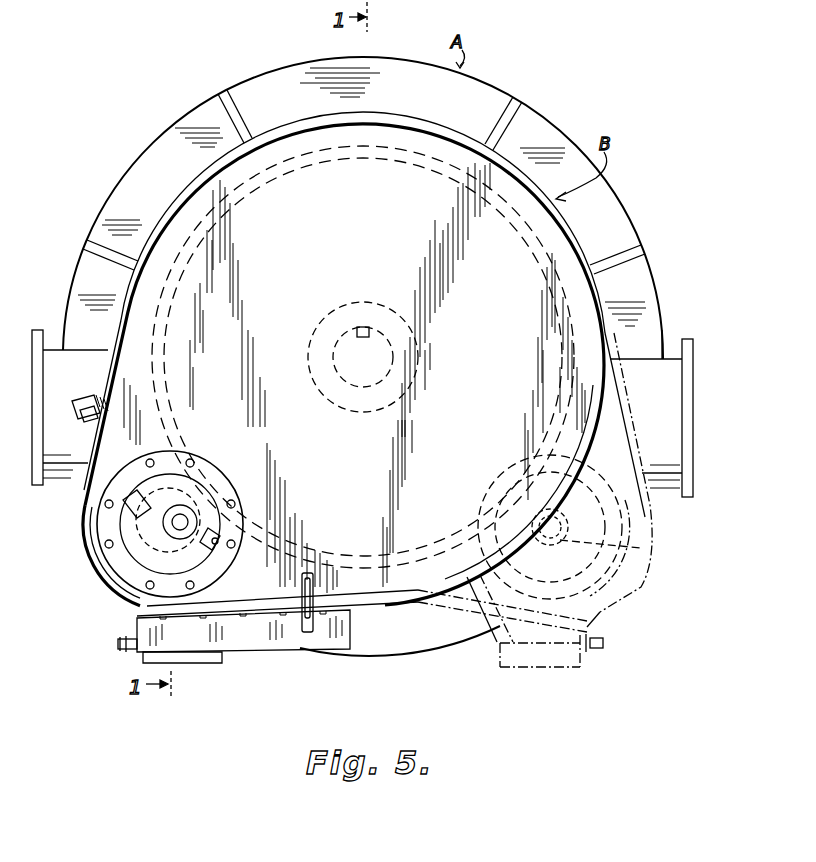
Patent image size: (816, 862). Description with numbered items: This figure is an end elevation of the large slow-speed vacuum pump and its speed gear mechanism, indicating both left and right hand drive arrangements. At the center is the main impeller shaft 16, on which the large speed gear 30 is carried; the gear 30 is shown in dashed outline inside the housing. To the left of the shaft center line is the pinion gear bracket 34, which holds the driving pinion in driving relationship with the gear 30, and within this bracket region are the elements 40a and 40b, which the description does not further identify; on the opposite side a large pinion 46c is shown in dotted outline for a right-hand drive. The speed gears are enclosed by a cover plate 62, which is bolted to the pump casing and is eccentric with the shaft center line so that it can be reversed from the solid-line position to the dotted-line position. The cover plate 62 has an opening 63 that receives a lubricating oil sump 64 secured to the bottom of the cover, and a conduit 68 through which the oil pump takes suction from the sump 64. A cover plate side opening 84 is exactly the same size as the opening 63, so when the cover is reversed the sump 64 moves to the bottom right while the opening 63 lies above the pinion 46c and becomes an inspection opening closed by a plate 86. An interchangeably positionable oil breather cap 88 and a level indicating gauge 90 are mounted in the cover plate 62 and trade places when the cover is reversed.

The main impeller shaft 16 is at (385, 355).
The speed gear 30 is at (457, 532).
The pinion gear bracket 34 is at (230, 466).
The shaft hub 40a is at (160, 549).
The shaft key 40b is at (155, 556).
The large pinion 46c is at (642, 550).
The cover plate 62 is at (190, 192).
The opening 63 is at (243, 607).
The lubricating oil sump 64 is at (205, 640).
The conduit 68 is at (125, 645).
The cover plate side opening 84 is at (108, 370).
The inspection plate 86 is at (82, 480).
The oil breather cap 88 is at (88, 400).
The level indicating gauge 90 is at (312, 572).